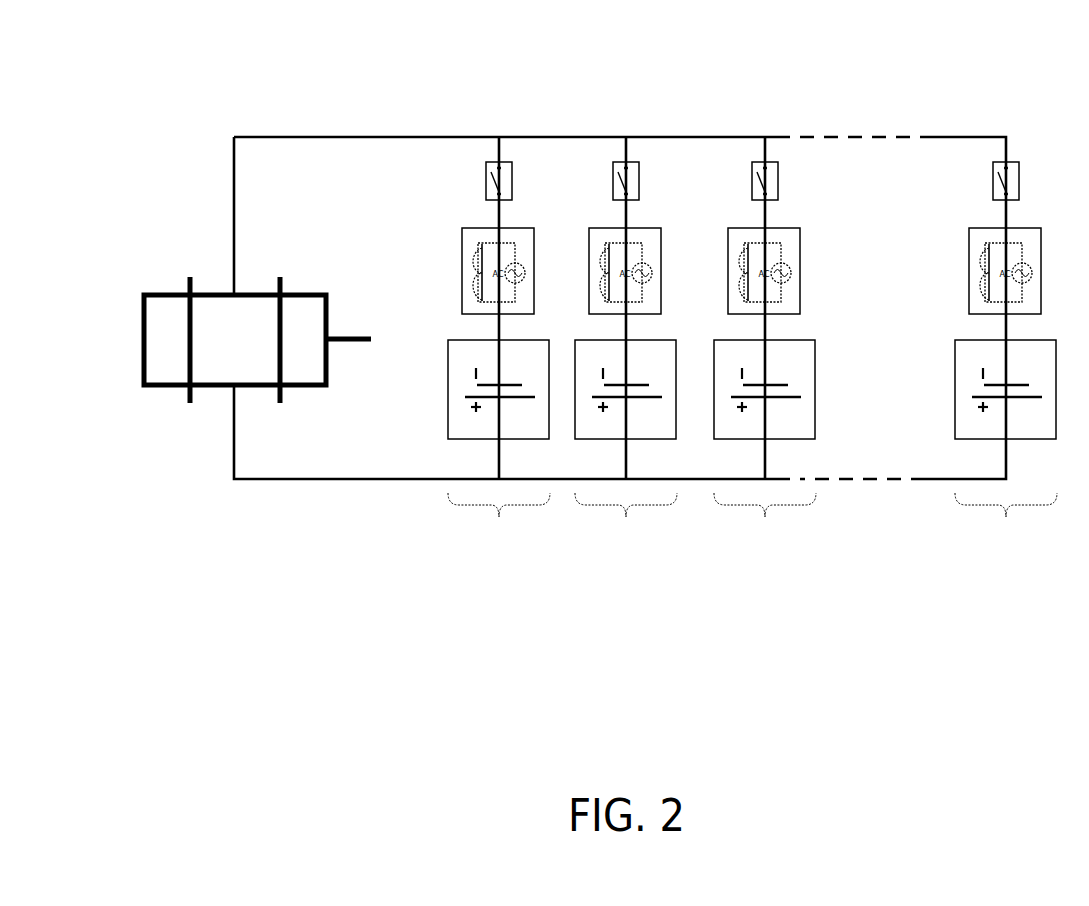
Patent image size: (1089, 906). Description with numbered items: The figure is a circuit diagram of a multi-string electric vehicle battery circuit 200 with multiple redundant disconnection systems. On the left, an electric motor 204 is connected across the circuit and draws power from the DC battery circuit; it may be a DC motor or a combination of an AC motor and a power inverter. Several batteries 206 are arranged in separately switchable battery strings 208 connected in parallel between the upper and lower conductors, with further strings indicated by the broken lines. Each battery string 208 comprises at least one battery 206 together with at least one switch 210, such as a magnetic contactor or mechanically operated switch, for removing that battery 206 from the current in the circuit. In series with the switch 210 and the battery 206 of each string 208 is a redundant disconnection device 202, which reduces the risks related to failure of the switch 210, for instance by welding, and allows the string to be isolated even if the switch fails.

The multi-string electric vehicle battery circuit 200 is at (158, 93).
The redundant disconnection device 202 is at (590, 220).
The electric motor 204 is at (144, 350).
The battery 206 is at (448, 403).
The battery string 208 is at (752, 525).
The switch 210 is at (486, 186).